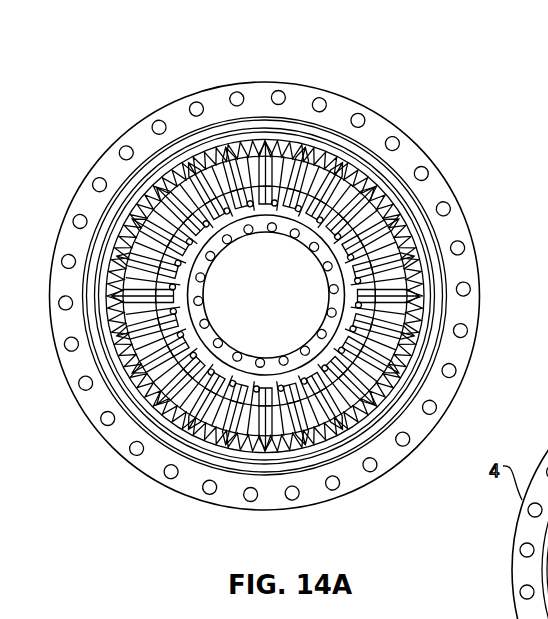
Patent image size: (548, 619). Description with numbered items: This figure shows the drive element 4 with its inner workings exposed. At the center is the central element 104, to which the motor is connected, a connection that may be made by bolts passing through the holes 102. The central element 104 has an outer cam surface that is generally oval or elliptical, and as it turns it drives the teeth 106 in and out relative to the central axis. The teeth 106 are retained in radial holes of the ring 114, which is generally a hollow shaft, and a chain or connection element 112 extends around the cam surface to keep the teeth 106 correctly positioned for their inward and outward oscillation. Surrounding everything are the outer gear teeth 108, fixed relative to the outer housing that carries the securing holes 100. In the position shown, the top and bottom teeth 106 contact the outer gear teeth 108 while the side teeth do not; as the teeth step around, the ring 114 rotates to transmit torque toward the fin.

The securing holes 100 is at (159, 126).
The drive element 4 is at (56, 228).
The holes 102 is at (292, 234).
The central element 104 is at (325, 290).
The teeth 106 is at (262, 420).
The outer gear teeth 108 is at (197, 424).
The chain or connection element 112 is at (288, 368).
The ring 114 is at (365, 214).